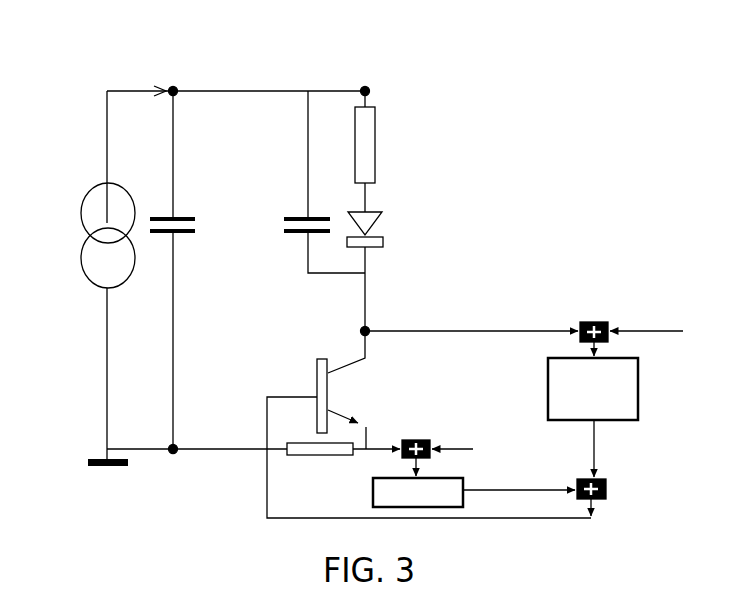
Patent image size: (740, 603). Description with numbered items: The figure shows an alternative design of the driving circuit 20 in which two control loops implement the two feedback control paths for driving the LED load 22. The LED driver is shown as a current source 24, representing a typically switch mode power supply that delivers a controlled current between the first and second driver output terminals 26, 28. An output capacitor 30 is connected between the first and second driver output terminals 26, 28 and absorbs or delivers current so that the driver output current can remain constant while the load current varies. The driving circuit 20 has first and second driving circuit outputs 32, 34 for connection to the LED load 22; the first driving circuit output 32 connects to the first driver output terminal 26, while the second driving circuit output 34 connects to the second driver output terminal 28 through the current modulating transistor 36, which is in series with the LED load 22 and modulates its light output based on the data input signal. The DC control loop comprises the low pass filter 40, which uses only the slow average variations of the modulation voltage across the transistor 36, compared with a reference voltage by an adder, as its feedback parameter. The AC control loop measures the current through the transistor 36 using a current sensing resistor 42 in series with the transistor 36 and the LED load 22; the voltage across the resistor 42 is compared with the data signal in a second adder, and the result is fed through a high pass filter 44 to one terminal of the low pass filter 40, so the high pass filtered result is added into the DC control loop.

The driving circuit 20 is at (365, 274).
The LED load 22 is at (377, 219).
The current source 24 is at (82, 250).
The first driver output terminal 26 is at (176, 91).
The second driver output terminal 28 is at (173, 447).
The output capacitor 30 is at (185, 217).
The first driving circuit output 32 is at (368, 90).
The second driving circuit output 34 is at (362, 330).
The current modulating transistor 36 is at (329, 391).
The low pass filter 40 is at (638, 383).
The current sensing resistor 42 is at (293, 457).
The high pass filter 44 is at (464, 480).